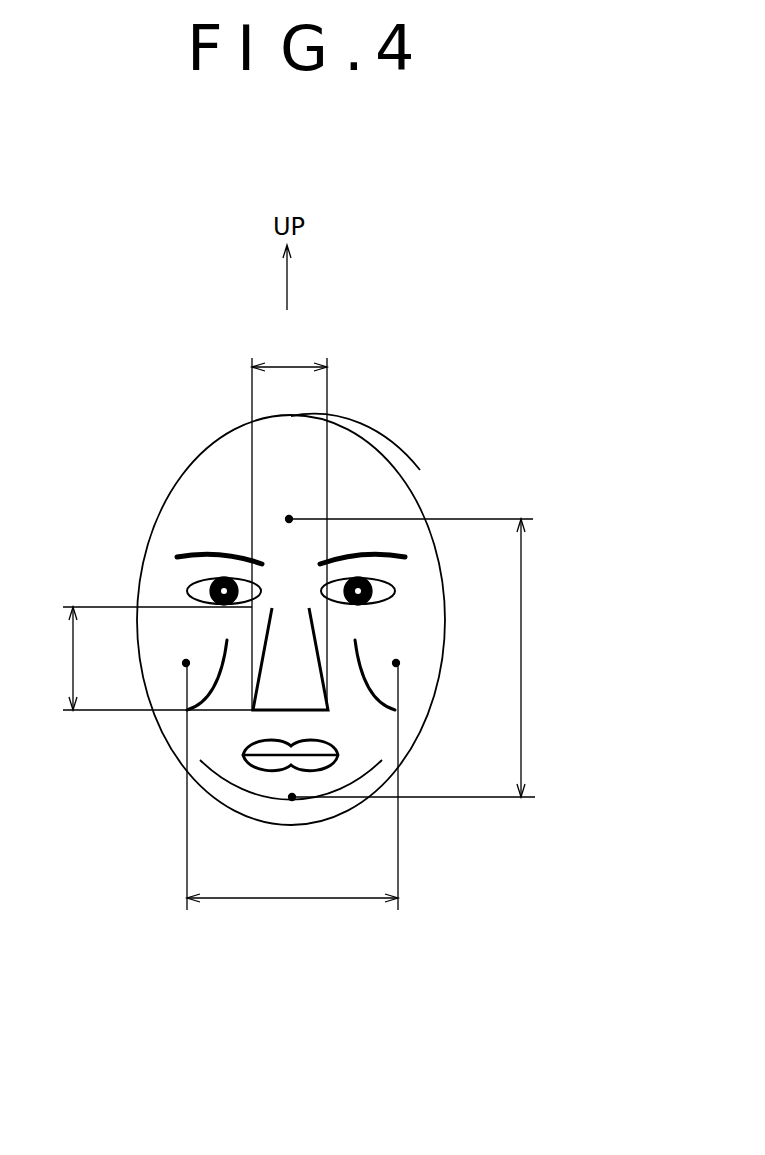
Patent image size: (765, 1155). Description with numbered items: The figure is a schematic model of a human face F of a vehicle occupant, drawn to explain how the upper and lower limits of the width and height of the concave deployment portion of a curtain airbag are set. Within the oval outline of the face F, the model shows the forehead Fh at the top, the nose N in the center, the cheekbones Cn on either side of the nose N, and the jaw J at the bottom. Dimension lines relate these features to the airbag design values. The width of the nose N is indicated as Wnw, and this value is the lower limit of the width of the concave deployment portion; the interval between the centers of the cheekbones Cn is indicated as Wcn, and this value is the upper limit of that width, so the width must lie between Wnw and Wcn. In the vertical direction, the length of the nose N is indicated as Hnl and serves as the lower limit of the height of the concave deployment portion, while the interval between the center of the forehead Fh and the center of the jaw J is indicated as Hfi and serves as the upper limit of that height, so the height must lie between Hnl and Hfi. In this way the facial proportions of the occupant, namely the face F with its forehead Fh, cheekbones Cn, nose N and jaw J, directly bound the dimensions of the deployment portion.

The face F is at (448, 445).
The forehead Fh is at (352, 455).
The cheekbones Cn is at (367, 678).
The nose N is at (324, 725).
The jaw J is at (268, 812).
The interval between center of forehead and center of jaw Hfi is at (427, 658).
The length of the nose Hnl is at (140, 658).
The width of the nose Wnw is at (289, 522).
The interval between centers of cheekbones Wcn is at (292, 786).